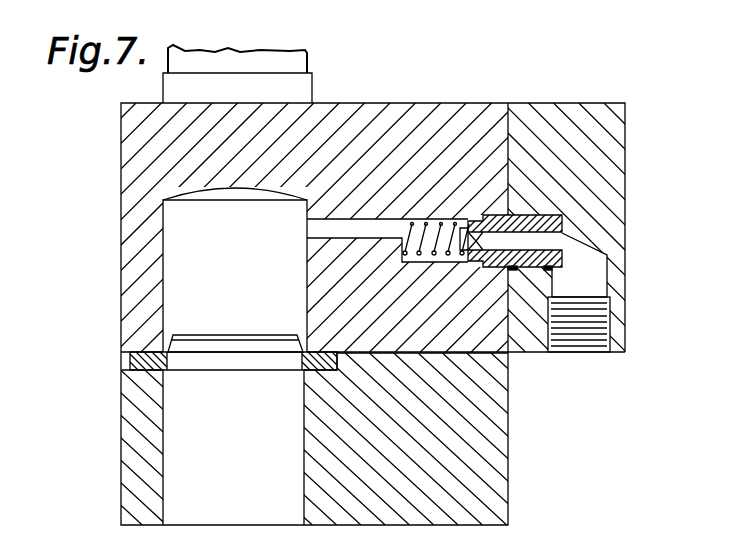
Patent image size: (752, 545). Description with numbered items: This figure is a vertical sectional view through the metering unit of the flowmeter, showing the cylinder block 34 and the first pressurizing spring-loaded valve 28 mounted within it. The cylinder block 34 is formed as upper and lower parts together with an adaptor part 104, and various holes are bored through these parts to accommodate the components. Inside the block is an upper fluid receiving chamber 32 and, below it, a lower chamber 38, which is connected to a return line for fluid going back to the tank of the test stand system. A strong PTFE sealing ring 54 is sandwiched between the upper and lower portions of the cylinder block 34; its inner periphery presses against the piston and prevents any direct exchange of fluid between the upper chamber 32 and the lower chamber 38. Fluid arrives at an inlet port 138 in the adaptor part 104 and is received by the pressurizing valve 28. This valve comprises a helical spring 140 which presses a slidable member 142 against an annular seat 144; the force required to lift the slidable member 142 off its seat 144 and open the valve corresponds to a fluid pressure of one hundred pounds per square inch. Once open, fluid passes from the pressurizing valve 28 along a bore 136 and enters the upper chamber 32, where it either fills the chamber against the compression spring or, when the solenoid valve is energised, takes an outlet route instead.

The first pressurizing spring-loaded valve 28 is at (525, 238).
The upper fluid receiving chamber 32 is at (177, 230).
The cylinder block 34 is at (130, 410).
The lower chamber 38 is at (190, 450).
The PTFE sealing ring 54 is at (130, 362).
The adaptor part 104 is at (620, 282).
The bore 136 is at (345, 221).
The inlet port 138 is at (578, 335).
The helical spring 140 is at (405, 253).
The slidable member 142 is at (465, 268).
The annular seat 144 is at (492, 217).